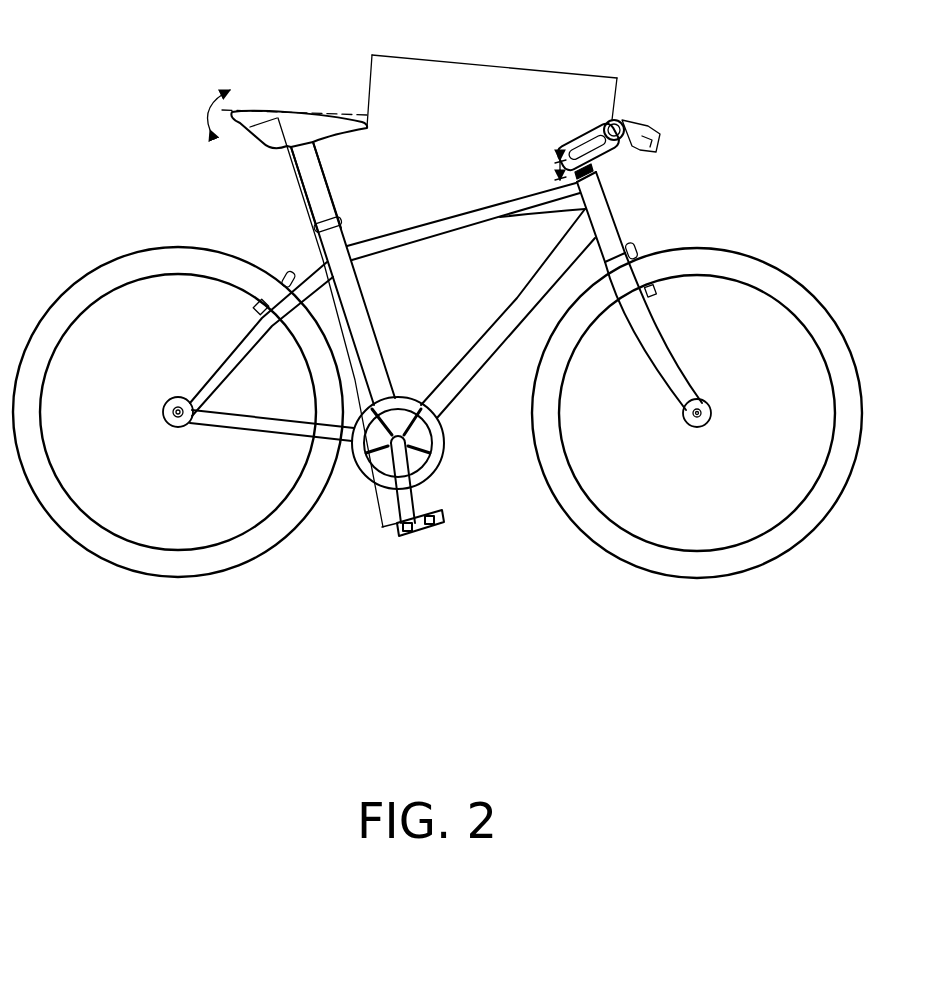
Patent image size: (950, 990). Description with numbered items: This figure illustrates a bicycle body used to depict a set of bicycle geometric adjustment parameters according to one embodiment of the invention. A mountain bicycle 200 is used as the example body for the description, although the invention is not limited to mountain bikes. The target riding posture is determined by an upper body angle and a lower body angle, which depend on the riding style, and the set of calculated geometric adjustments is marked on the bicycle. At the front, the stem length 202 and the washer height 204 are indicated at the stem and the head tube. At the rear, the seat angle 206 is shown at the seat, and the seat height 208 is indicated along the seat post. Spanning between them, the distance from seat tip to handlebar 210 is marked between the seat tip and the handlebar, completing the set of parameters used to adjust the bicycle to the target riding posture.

The mountain bicycle 200 is at (437, 348).
The stem length 202 is at (580, 110).
The washer height 204 is at (562, 177).
The seat angle 206 is at (200, 117).
The seat height 208 is at (292, 220).
The distance from seat tip to handlebar 210 is at (452, 50).